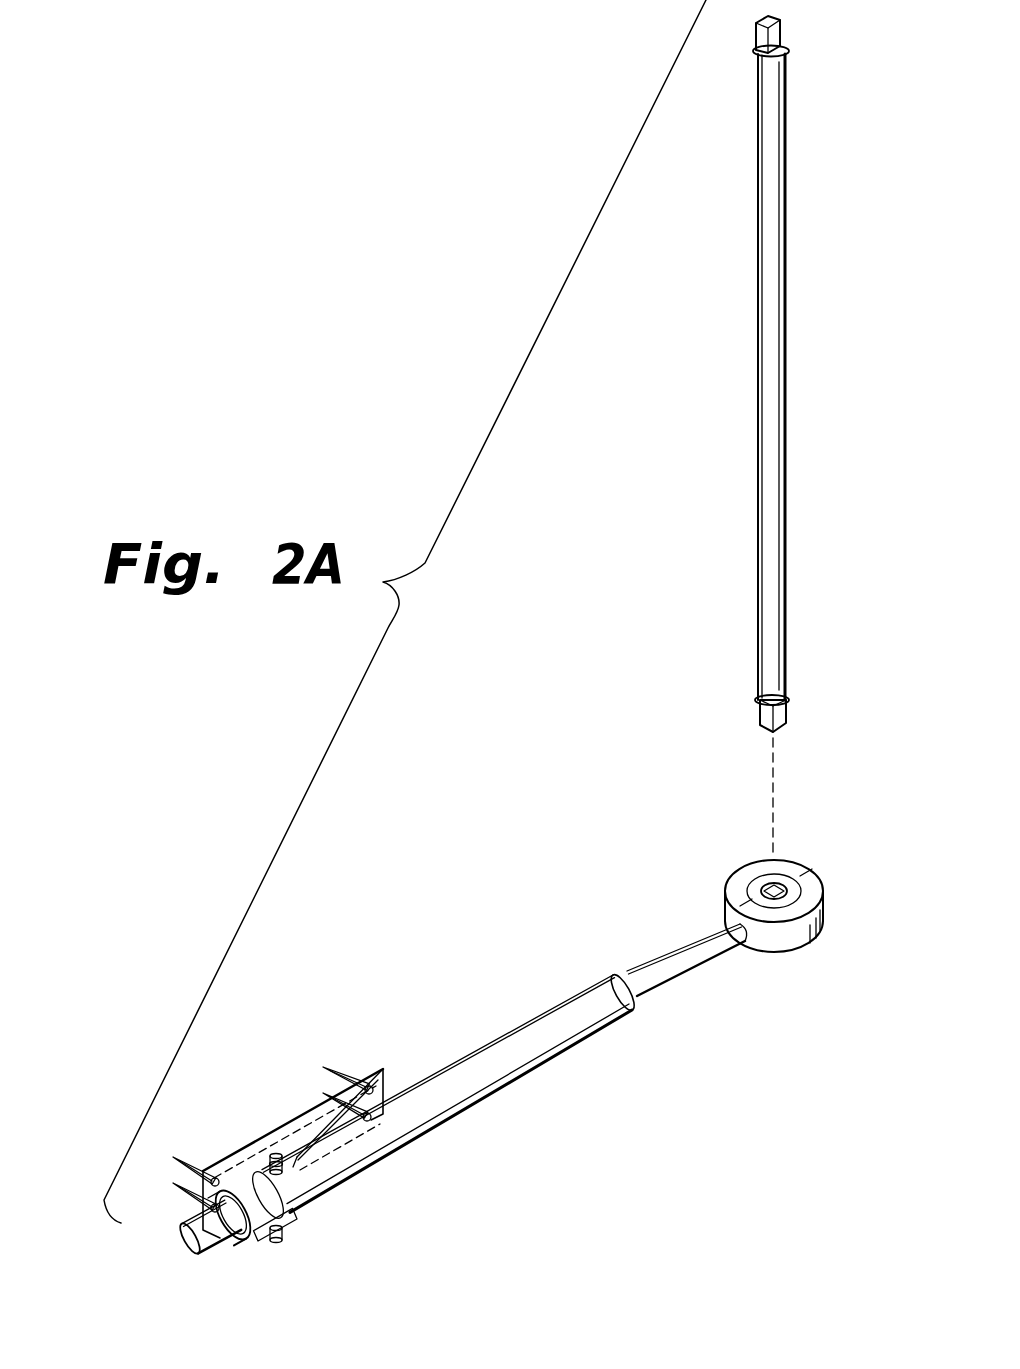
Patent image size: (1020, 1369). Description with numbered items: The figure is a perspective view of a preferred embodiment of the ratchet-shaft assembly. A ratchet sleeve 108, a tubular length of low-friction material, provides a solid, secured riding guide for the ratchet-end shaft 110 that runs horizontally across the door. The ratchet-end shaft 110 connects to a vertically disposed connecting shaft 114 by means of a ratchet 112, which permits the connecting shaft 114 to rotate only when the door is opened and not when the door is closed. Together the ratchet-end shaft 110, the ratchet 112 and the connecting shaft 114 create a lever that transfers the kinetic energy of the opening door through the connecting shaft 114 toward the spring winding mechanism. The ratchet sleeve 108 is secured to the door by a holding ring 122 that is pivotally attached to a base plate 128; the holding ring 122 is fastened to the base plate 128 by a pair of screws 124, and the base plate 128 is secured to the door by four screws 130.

The ratchet sleeve 108 is at (538, 1030).
The ratchet-end shaft 110 is at (680, 956).
The ratchet 112 is at (786, 938).
The connecting shaft 114 is at (762, 362).
The holding ring 122 is at (308, 1213).
The screws 124 is at (270, 1150).
The base plate 128 is at (257, 1245).
The screws 130 is at (343, 1064).